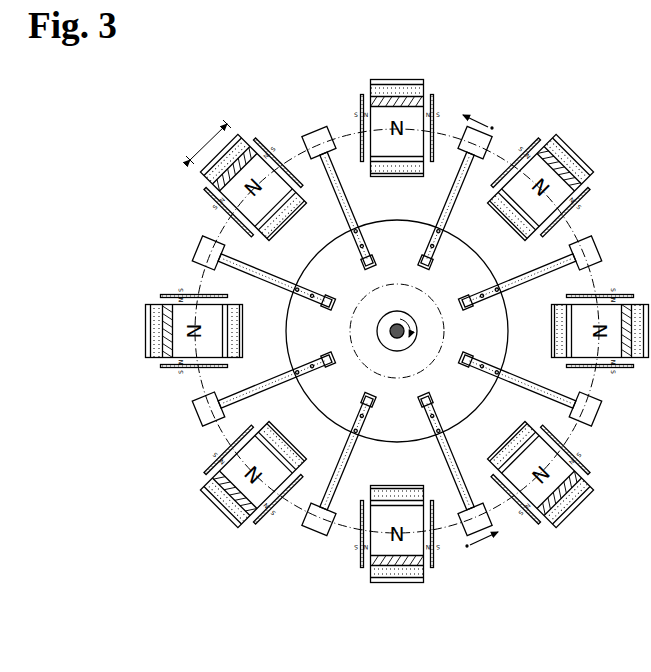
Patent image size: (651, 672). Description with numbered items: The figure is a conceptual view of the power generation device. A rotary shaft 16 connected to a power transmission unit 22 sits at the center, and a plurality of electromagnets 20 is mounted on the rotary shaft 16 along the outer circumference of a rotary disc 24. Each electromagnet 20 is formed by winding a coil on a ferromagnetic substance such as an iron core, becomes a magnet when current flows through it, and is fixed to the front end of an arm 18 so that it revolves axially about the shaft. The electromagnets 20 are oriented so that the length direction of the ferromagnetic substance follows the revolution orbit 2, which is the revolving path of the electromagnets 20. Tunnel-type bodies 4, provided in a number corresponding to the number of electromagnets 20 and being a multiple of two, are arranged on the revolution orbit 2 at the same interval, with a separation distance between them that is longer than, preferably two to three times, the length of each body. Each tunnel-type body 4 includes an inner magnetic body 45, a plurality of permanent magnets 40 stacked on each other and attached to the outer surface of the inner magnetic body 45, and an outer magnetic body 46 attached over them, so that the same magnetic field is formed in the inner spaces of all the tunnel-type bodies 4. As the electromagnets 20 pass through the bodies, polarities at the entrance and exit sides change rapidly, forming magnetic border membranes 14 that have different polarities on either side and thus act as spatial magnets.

The revolution orbit 2 is at (500, 153).
The tunnel-type body 4 is at (560, 153).
The magnetic border membrane 14 is at (360, 100).
The rotary shaft 16 is at (390, 328).
The arm 18 is at (346, 206).
The electromagnet 20 is at (317, 135).
The power transmission unit 22 is at (425, 372).
The rotary disc 24 is at (467, 252).
The permanent magnet 40 is at (387, 92).
The inner magnetic body 45 is at (396, 100).
The outer magnetic body 46 is at (411, 82).